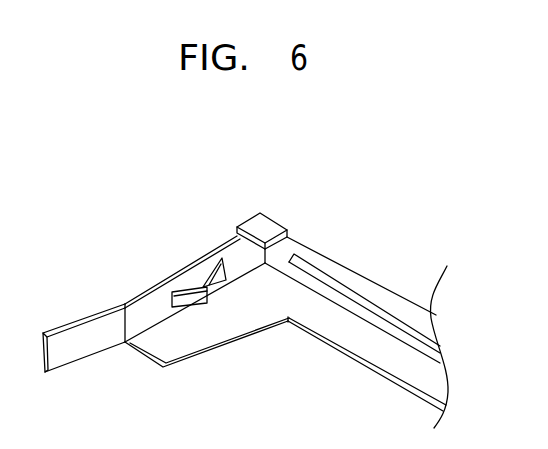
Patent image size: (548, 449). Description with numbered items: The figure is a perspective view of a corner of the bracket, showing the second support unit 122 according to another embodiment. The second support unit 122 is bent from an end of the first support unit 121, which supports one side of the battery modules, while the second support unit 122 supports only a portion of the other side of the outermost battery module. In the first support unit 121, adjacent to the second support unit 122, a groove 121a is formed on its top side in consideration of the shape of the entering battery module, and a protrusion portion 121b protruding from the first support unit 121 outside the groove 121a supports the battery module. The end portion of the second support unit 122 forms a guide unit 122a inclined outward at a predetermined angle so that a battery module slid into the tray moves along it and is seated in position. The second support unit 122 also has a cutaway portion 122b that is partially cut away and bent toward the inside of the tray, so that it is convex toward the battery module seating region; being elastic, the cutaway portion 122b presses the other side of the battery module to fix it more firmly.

The first support unit 121 is at (378, 312).
The groove 121a is at (296, 243).
The protrusion portion 121b is at (262, 218).
The second support unit 122 is at (234, 262).
The guide unit 122a is at (80, 334).
The cutaway portion 122b is at (190, 287).